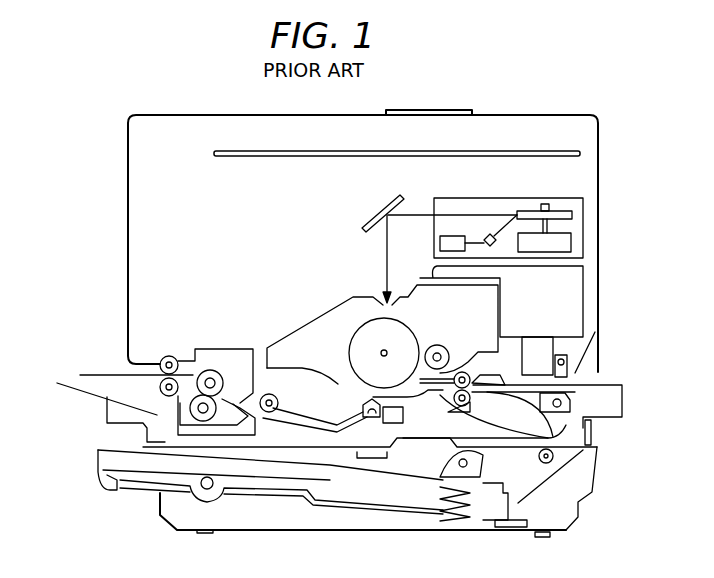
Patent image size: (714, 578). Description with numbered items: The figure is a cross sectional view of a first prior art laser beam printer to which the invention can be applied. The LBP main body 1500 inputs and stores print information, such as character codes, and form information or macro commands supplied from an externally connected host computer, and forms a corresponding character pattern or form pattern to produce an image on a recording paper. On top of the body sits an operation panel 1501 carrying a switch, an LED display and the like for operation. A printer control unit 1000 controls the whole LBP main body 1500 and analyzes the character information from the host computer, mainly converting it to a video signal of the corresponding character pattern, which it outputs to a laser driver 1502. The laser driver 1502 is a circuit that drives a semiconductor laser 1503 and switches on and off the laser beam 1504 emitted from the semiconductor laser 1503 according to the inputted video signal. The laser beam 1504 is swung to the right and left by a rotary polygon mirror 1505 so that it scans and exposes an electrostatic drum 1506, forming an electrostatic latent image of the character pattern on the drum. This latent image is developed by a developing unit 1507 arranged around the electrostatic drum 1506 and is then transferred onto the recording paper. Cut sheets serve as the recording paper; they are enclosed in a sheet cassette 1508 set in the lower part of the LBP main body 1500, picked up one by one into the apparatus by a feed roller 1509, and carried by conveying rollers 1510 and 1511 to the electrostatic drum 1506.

The LBP main body 1500 is at (558, 114).
The operation panel 1501 is at (455, 109).
The printer control unit 1000 is at (579, 153).
The laser beam 1504 is at (503, 216).
The rotary polygon mirror 1505 is at (570, 212).
The laser driver 1502 is at (440, 243).
The semiconductor laser 1503 is at (493, 245).
The electrostatic drum 1506 is at (352, 300).
The developing unit 1507 is at (293, 338).
The sheet cassette 1508 is at (97, 479).
The feed roller 1509 is at (433, 480).
The conveying roller 1510 is at (548, 462).
The conveying roller 1511 is at (593, 432).